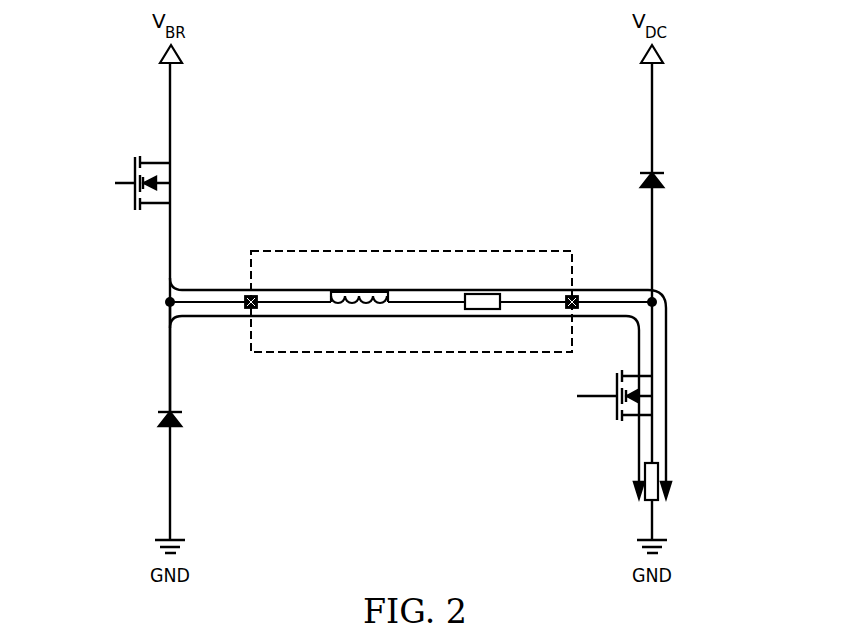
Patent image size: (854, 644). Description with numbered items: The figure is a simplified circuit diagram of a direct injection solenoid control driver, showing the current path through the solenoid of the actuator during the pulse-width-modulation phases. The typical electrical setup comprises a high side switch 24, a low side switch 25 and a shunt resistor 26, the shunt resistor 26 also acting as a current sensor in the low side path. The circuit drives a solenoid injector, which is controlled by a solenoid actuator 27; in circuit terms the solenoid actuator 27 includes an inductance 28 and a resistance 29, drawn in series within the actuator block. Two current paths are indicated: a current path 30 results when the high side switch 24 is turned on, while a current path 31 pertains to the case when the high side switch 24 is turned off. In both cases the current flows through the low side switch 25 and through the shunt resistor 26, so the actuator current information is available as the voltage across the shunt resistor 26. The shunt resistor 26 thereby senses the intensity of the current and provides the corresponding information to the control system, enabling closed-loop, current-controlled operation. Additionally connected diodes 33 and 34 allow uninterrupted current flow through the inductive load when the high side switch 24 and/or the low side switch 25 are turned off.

The high side switch 24 is at (134, 165).
The low side switch 25 is at (615, 383).
The shunt resistor 26 is at (660, 470).
The solenoid actuator 27 is at (410, 250).
The inductance 28 is at (360, 304).
The resistance 29 is at (482, 310).
The current path 30 is at (212, 290).
The current path 31 is at (170, 362).
The diode 33 is at (182, 420).
The diode 34 is at (665, 182).